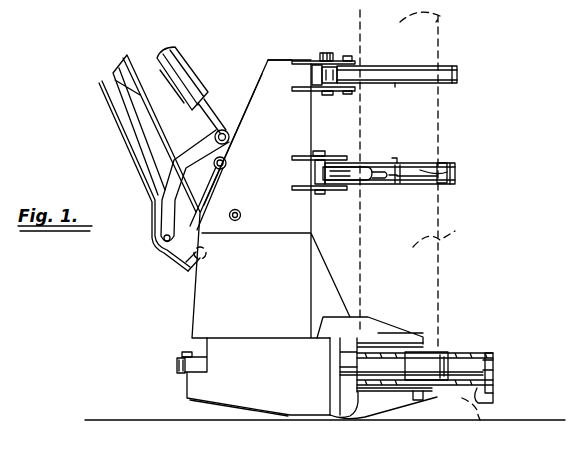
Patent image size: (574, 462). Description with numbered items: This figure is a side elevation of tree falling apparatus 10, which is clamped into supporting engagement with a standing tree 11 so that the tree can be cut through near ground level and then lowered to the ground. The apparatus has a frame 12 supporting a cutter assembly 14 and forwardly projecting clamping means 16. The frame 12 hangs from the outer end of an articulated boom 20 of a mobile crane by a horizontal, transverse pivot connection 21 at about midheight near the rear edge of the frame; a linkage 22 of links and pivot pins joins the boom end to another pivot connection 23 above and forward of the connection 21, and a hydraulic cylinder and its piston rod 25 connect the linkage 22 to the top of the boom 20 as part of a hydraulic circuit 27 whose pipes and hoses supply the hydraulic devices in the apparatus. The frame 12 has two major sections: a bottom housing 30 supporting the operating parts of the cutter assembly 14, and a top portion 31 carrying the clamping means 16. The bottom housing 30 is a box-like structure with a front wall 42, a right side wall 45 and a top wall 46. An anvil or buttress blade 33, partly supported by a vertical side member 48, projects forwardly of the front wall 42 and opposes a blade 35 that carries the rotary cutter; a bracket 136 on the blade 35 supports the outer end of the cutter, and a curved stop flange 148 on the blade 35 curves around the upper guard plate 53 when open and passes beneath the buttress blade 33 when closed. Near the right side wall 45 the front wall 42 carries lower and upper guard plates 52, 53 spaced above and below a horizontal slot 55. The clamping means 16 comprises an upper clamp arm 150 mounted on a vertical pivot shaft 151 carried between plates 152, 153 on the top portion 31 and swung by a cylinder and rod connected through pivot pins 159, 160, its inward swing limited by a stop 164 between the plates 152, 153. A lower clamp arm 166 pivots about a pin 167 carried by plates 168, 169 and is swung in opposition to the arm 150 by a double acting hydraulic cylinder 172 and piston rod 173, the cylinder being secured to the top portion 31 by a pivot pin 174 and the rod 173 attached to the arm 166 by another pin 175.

The tree falling apparatus 10 is at (283, 44).
The standing tree 11 is at (447, 232).
The frame 12 is at (196, 315).
The cutter assembly 14 is at (478, 344).
The clamping means 16 is at (417, 77).
The articulated boom 20 is at (118, 90).
The pivot connection 21 is at (188, 268).
The linkage 22 is at (200, 150).
The pivot connection 23 is at (241, 214).
The hydraulic cylinder and piston rod 25 is at (205, 102).
The hydraulic circuit 27 is at (100, 80).
The bottom housing 30 is at (196, 384).
The top portion 31 is at (243, 127).
The buttress blade 33 is at (492, 355).
The blade 35 is at (462, 410).
The front wall 42 is at (363, 400).
The right side wall 45 is at (258, 415).
The top wall 46 is at (245, 338).
The vertical side member 48 is at (488, 402).
The lower guard plate 52 is at (415, 401).
The upper guard plate 53 is at (340, 352).
The horizontal slot 55 is at (340, 371).
The bracket 136 is at (493, 370).
The curved stop flange 148 is at (440, 352).
The upper clamp arm 150 is at (440, 66).
The vertical pivot shaft 151 is at (330, 53).
The upper plate 152 is at (306, 62).
The lower plate 153 is at (302, 91).
The pivot pin 159 is at (352, 58).
The pivot pin 160 is at (395, 87).
The stop 164 is at (272, 60).
The lower clamp arm 166 is at (458, 166).
The pin 167 is at (318, 151).
The upper plate 168 is at (295, 156).
The lower plate 169 is at (296, 186).
The double acting hydraulic cylinder 172 is at (358, 170).
The piston rod 173 is at (383, 180).
The pivot pin 174 is at (338, 190).
The pin 175 is at (428, 163).